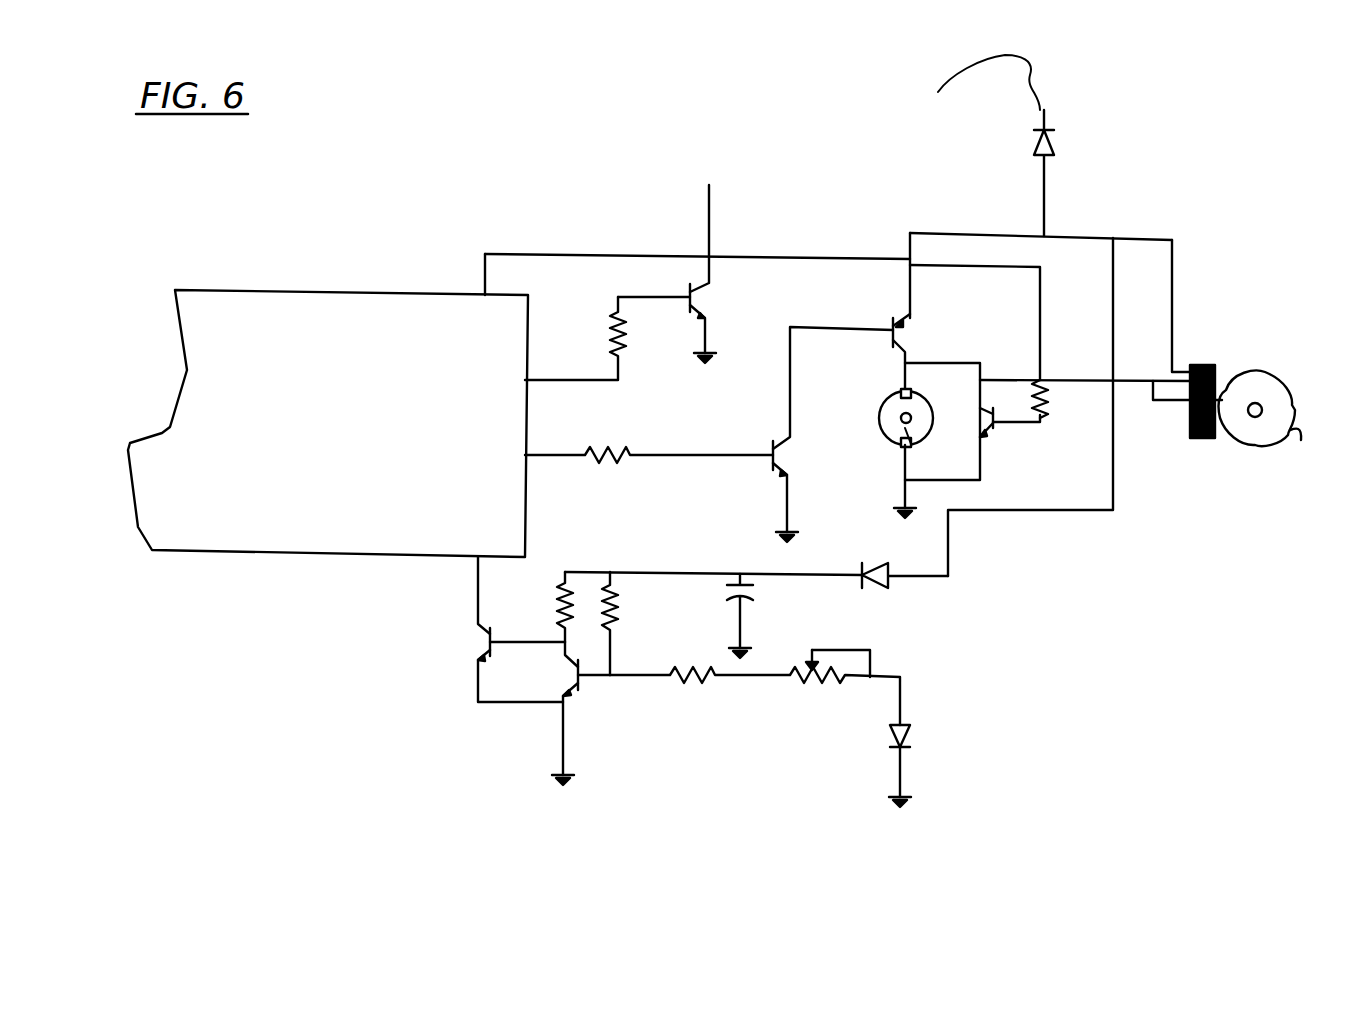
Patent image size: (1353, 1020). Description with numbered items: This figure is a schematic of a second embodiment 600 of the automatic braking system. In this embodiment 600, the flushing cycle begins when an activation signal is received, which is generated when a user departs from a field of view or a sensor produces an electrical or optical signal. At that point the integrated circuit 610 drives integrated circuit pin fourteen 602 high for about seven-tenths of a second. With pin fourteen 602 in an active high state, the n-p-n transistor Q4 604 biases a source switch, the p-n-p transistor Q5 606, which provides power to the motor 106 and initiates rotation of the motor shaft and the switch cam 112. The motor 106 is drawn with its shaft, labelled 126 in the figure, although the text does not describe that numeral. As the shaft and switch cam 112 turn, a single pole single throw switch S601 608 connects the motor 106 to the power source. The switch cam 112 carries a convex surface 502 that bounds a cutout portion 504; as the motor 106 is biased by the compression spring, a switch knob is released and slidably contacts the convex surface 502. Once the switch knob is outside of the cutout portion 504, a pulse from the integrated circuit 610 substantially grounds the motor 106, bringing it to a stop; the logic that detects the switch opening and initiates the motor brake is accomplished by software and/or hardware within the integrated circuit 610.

The second embodiment 600 is at (332, 145).
The integrated circuit 610 is at (232, 285).
The integrated circuit pin 14 602 is at (453, 471).
The n-p-n transistor Q4 604 is at (832, 392).
The p-n-p transistor Q5 606 is at (925, 326).
The motor 106 is at (877, 440).
The motor shaft 126 is at (897, 455).
The convex surface 502 is at (1303, 405).
The cutout portion 504 is at (1296, 437).
The switch cam 112 is at (1255, 440).
The single pole single throw switch S601 608 is at (1195, 442).